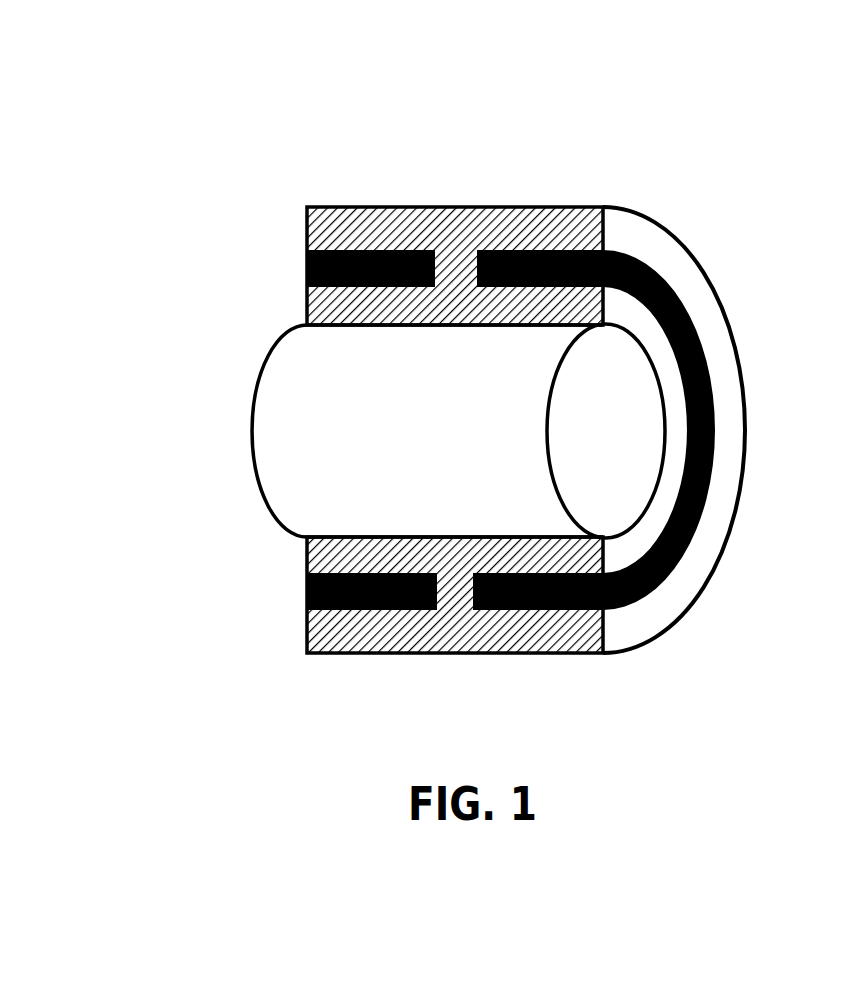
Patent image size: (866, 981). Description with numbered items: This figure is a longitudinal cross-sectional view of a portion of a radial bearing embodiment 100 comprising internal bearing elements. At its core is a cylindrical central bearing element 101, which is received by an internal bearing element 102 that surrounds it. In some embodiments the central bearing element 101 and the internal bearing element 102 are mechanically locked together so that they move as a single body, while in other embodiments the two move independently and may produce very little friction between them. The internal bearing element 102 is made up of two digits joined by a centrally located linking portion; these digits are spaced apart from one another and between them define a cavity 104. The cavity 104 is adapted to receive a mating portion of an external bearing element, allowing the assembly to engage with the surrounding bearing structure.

The embodiment 100 is at (464, 364).
The cylindrical central bearing element 101 is at (275, 410).
The internal bearing element 102 is at (526, 371).
The cavity 104 is at (625, 607).